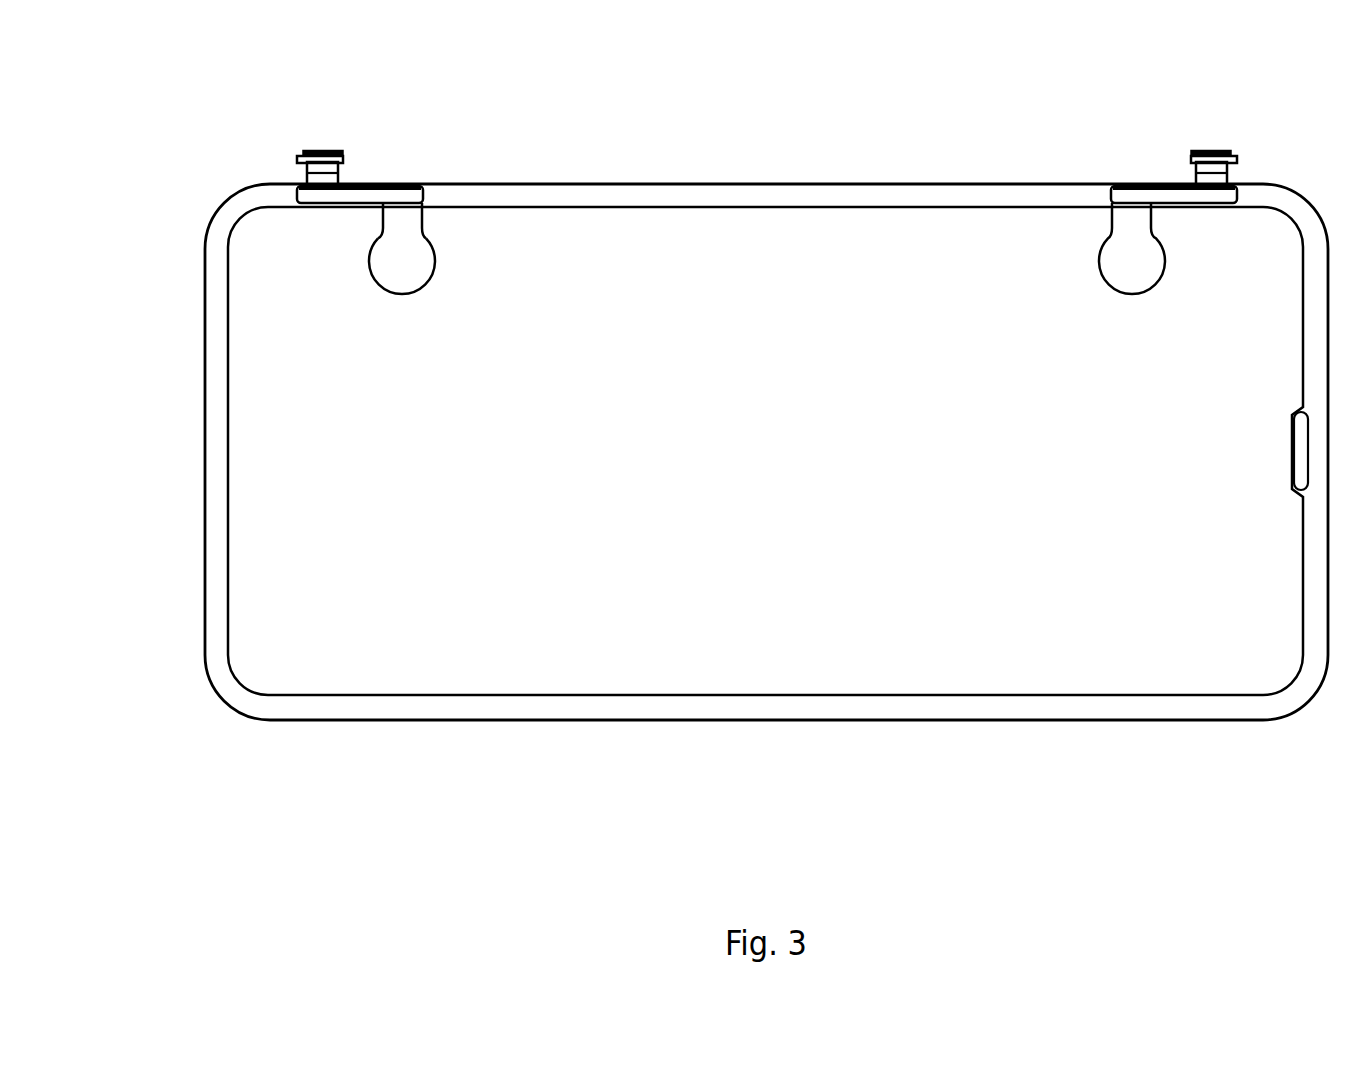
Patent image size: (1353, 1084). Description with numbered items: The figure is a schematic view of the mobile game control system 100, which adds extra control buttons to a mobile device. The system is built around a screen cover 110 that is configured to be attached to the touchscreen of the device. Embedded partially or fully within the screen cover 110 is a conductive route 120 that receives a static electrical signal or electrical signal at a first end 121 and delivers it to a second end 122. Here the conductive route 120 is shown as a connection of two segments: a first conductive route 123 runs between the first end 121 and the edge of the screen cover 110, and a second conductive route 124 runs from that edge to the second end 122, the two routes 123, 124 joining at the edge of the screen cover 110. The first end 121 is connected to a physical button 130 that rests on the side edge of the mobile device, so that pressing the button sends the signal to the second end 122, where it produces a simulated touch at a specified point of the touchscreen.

The mobile game control system 100 is at (1078, 720).
The screen cover 110 is at (307, 635).
The conductive route 120 is at (366, 198).
The first end 121 is at (340, 173).
The second end 122 is at (403, 262).
The first conductive route 123 is at (320, 192).
The second conductive route 124 is at (403, 215).
The physical button 130 is at (328, 148).